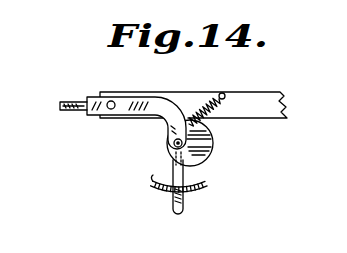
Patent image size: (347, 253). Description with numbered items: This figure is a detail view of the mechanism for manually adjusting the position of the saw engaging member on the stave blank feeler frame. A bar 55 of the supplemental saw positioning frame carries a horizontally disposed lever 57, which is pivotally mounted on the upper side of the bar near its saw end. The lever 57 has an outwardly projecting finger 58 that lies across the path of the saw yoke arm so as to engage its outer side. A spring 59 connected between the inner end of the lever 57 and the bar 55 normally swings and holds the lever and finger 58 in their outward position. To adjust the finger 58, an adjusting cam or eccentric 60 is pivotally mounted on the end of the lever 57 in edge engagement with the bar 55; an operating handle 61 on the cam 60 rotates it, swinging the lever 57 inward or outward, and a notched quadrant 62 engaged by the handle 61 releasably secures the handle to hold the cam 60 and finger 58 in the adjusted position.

The bar 55 is at (252, 98).
The lever 57 is at (125, 102).
The finger 58 is at (77, 109).
The spring 59 is at (206, 117).
The adjusting cam or eccentric 60 is at (210, 152).
The operating handle 61 is at (183, 207).
The notched quadrant 62 is at (160, 181).